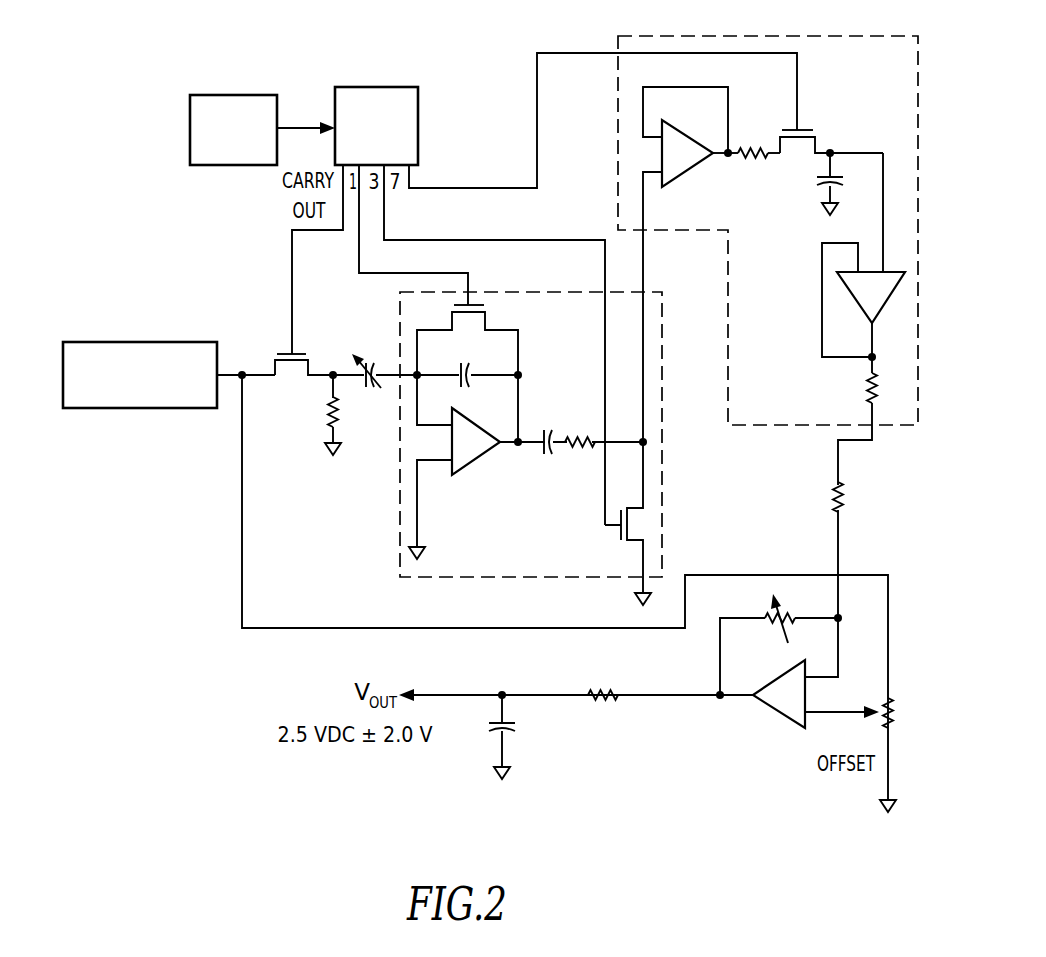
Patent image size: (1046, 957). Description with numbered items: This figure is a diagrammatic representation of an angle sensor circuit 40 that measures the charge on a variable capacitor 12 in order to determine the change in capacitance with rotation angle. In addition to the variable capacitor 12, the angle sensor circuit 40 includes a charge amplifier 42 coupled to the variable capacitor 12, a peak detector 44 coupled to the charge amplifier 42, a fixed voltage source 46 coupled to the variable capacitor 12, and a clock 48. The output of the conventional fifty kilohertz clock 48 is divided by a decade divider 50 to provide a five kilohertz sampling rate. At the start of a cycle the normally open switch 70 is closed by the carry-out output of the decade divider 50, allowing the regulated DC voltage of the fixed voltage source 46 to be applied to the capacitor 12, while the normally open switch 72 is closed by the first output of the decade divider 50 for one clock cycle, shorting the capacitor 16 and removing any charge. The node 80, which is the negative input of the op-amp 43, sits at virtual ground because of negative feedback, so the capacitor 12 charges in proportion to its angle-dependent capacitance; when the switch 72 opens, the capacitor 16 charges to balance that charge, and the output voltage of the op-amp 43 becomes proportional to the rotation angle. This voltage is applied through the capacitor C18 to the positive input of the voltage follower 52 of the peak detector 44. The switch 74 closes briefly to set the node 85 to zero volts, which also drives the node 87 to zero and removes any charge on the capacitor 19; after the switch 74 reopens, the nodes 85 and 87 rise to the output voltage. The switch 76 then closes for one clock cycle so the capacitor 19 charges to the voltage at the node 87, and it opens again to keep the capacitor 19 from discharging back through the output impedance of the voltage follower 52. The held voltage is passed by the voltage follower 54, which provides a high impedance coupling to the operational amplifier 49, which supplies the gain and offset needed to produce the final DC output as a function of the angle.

The clock 48 is at (239, 95).
The decade divider 50 is at (398, 85).
The angle sensor circuit 40 is at (522, 105).
The fixed voltage source 46 is at (167, 341).
The normally open switch 70 is at (276, 356).
The variable capacitor 12 is at (374, 362).
The node 80 is at (415, 379).
The charge amplifier 42 is at (531, 434).
The capacitor 16 is at (471, 390).
The normally open switch 72 is at (489, 313).
The op-amp 43 is at (477, 478).
The capacitor C18 is at (548, 427).
The node 85 is at (646, 440).
The switch 74 is at (620, 508).
The peak detector 44 is at (768, 230).
The voltage follower 52 is at (690, 150).
The node 87 is at (732, 151).
The switch 76 is at (816, 128).
The capacitor 19 is at (848, 180).
The voltage follower 54 is at (859, 415).
The operational amplifier 49 is at (690, 661).